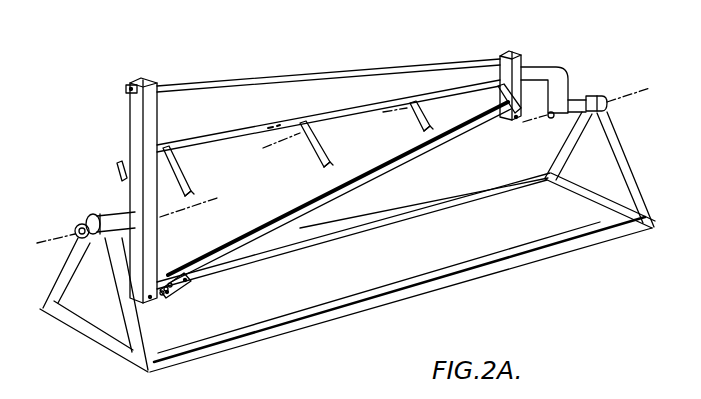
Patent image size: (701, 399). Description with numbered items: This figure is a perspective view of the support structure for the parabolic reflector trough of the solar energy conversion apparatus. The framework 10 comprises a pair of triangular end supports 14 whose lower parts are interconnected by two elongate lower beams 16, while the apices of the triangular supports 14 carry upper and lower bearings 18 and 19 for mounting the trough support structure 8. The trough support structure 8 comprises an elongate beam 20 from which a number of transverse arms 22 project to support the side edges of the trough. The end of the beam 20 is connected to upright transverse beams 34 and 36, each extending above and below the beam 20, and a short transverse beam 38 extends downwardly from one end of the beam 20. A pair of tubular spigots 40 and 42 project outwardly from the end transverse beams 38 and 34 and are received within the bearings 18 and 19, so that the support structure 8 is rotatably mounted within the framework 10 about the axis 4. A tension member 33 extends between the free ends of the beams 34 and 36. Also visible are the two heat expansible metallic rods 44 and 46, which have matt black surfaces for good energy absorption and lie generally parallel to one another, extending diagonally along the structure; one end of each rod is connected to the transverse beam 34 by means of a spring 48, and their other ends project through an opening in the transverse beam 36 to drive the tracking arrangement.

The axis 4 is at (62, 232).
The trough support structure 8 is at (128, 80).
The framework 10 is at (292, 333).
The triangular end supports 14 is at (83, 308).
The elongate lower beams 16 is at (300, 247).
The upper bearing 18 is at (592, 97).
The lower bearing 19 is at (100, 213).
The elongate beam 20 is at (327, 115).
The transverse arms 22 is at (118, 173).
The tension member 33 is at (260, 78).
The upright transverse beam 34 is at (140, 119).
The upright transverse beam 36 is at (515, 68).
The short transverse beam 38 is at (563, 85).
The tubular spigot 40 is at (573, 100).
The tubular spigot 42 is at (118, 207).
The heat expansible metallic rod 44 is at (268, 224).
The heat expansible metallic rod 46 is at (355, 192).
The spring 48 is at (171, 295).